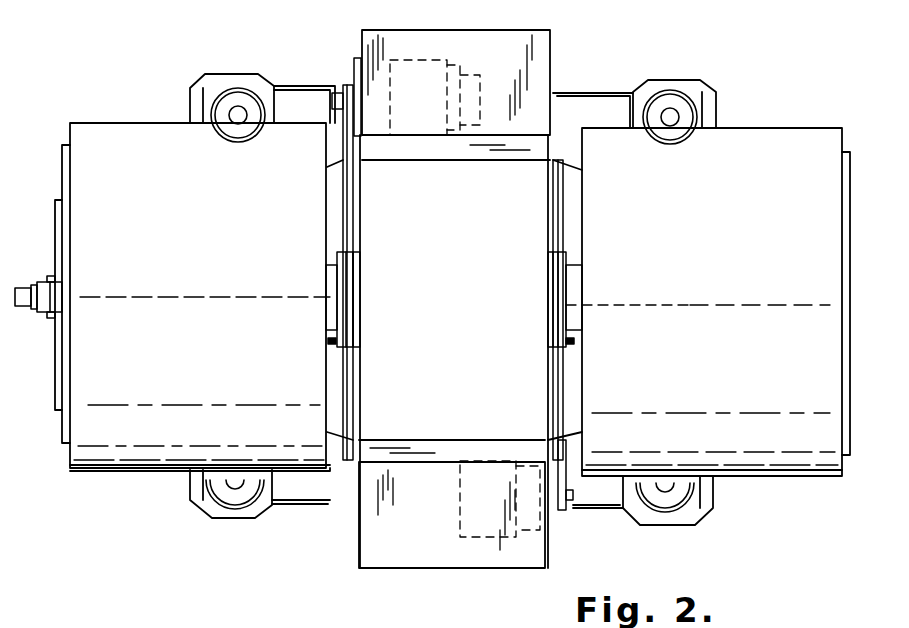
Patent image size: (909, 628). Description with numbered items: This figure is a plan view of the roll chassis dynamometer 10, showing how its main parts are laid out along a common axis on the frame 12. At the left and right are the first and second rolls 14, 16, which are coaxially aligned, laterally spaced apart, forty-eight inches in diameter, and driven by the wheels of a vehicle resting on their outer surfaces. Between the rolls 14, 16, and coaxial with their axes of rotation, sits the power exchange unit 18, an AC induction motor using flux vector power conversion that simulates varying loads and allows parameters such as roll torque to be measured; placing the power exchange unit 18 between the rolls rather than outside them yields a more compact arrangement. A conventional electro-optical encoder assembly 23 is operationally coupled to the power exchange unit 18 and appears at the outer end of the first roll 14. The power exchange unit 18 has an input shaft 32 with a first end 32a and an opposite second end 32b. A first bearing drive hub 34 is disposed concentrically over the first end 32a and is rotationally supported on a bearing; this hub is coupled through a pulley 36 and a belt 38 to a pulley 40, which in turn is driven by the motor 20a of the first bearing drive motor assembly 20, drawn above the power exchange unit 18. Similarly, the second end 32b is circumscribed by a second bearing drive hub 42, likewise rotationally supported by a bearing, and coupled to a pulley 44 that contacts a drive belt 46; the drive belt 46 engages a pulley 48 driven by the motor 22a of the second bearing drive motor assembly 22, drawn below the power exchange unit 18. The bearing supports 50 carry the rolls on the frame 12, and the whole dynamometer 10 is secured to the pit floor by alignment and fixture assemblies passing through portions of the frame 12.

The roll chassis dynamometer 10 is at (84, 84).
The frame 12 is at (276, 508).
The first roll 14 is at (138, 137).
The second roll 16 is at (775, 140).
The power exchange unit 18 is at (466, 316).
The first bearing drive motor assembly 20 is at (358, 40).
The motor 20a is at (440, 62).
The second bearing drive motor assembly 22 is at (426, 575).
The motor 22a is at (460, 537).
The electro-optical encoder assembly 23 is at (30, 283).
The input shaft 32 is at (362, 348).
The first end of input shaft 32a is at (324, 272).
The second end of input shaft 32b is at (550, 353).
The first bearing drive hub 34 is at (332, 297).
The pulley 36 is at (357, 263).
The belt 38 is at (353, 212).
The pulley 40 is at (340, 93).
The second bearing drive hub 42 is at (575, 270).
The pulley 44 is at (570, 305).
The drive belt 46 is at (563, 385).
The pulley 48 is at (568, 512).
The bearing 50 is at (232, 104).